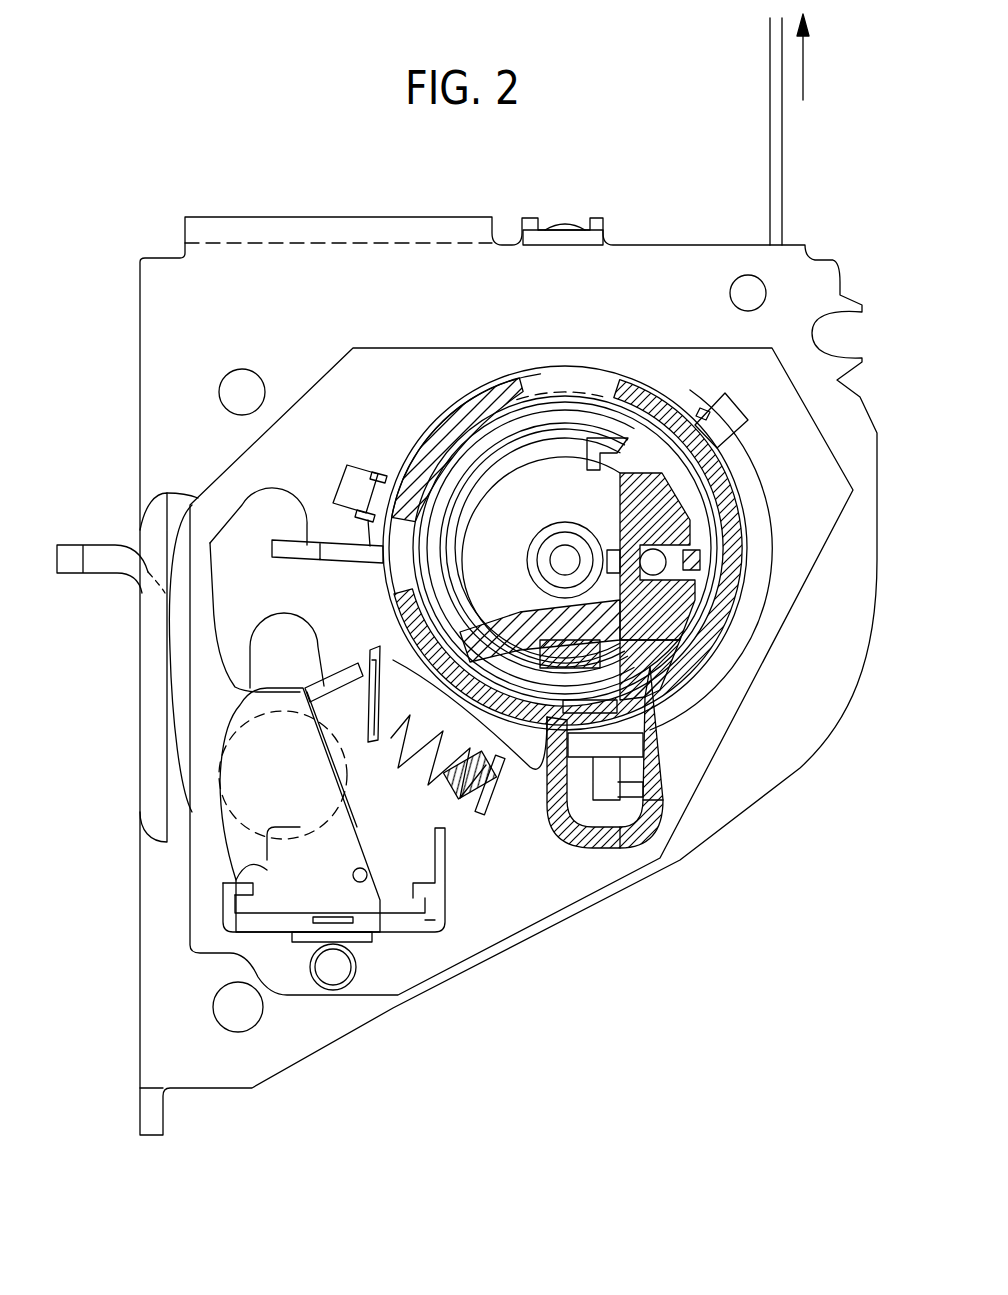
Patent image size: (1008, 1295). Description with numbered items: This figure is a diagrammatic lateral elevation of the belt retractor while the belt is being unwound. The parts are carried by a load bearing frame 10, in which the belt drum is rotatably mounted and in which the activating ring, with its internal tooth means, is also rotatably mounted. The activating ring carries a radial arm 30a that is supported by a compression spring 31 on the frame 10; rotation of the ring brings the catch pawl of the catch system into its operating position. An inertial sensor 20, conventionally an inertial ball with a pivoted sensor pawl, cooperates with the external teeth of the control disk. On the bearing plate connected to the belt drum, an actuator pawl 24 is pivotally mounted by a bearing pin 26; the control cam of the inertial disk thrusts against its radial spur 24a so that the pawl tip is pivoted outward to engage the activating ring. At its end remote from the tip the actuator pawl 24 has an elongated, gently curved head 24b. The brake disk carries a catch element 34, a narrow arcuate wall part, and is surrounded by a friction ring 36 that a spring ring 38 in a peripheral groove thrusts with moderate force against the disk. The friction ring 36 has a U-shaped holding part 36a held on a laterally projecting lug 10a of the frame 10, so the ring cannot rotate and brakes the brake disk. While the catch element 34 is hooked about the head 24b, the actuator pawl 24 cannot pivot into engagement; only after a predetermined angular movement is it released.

The load bearing frame 10 is at (783, 728).
The laterally projecting lug 10a is at (662, 700).
The inertial sensor 20 is at (264, 789).
The actuator pawl 24 is at (647, 515).
The radial spur 24a is at (690, 580).
The elongated head 24b is at (645, 665).
The bearing pin 26 is at (658, 561).
The radial arm 30a is at (387, 653).
The compression spring 31 is at (394, 758).
The catch element 34 is at (560, 655).
The friction ring 36 is at (700, 645).
The U-shaped holding part 36a is at (612, 853).
The spring ring 38 is at (585, 392).